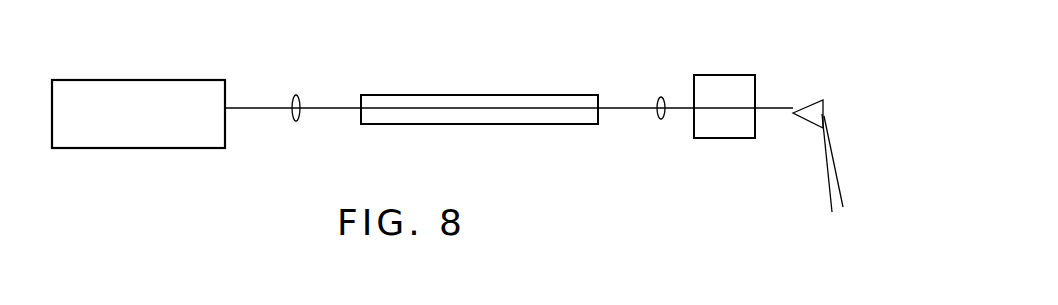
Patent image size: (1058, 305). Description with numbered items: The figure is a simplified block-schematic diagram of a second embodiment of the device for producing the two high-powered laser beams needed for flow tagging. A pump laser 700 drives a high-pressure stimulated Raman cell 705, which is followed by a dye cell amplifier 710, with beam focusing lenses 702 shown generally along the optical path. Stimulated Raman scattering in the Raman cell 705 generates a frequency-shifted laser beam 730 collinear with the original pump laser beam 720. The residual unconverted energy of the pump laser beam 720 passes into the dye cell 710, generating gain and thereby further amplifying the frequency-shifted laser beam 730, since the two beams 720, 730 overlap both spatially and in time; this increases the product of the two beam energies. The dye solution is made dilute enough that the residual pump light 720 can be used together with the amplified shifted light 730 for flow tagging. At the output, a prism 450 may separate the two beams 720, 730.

The pump laser 700 is at (195, 148).
The beam focusing lenses 702 is at (296, 95).
The high-pressure stimulated Raman cell 705 is at (393, 98).
The dye cell amplifier 710 is at (733, 82).
The pump laser beam 720 is at (252, 108).
The frequency-shifted laser beam 730 is at (843, 206).
The prism 450 is at (826, 107).